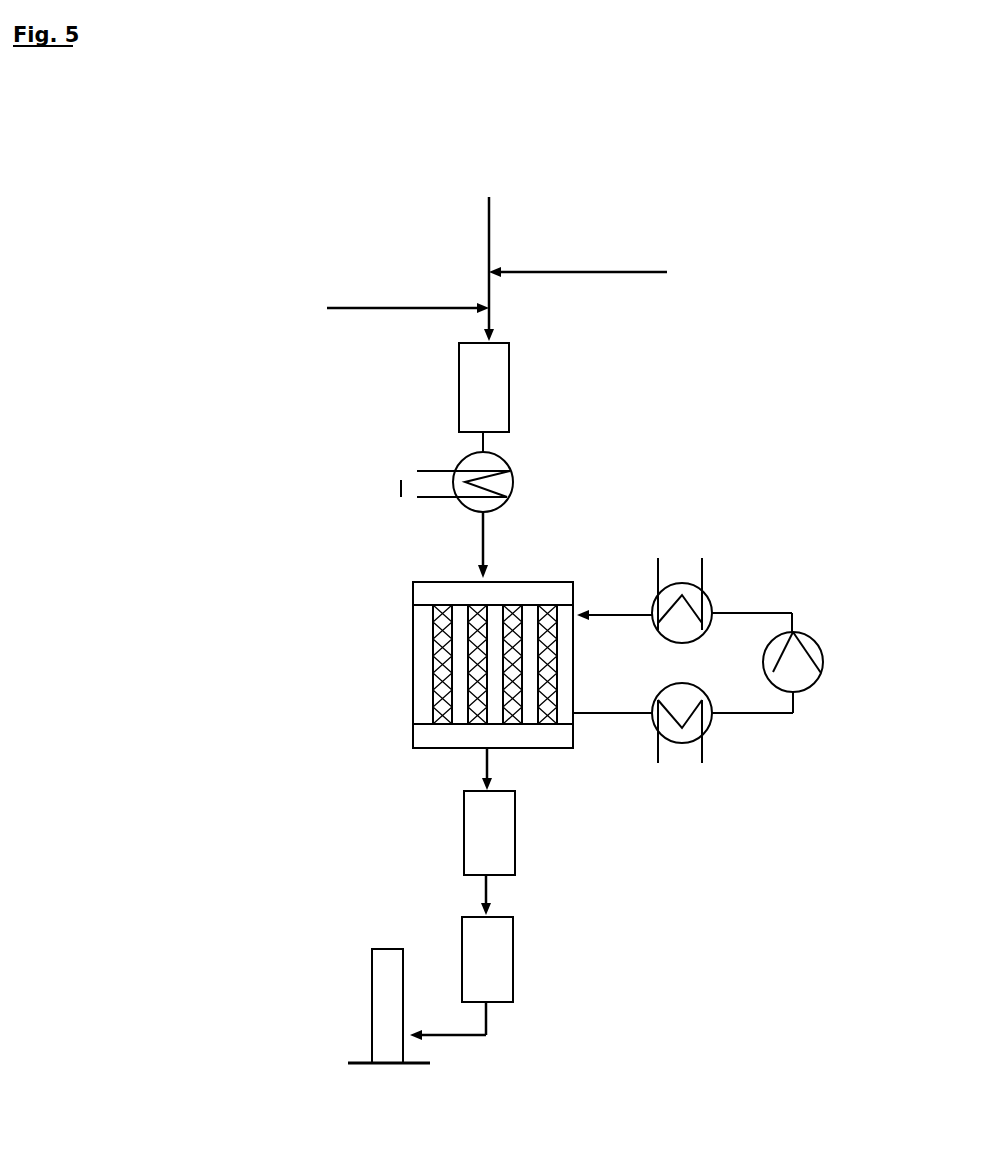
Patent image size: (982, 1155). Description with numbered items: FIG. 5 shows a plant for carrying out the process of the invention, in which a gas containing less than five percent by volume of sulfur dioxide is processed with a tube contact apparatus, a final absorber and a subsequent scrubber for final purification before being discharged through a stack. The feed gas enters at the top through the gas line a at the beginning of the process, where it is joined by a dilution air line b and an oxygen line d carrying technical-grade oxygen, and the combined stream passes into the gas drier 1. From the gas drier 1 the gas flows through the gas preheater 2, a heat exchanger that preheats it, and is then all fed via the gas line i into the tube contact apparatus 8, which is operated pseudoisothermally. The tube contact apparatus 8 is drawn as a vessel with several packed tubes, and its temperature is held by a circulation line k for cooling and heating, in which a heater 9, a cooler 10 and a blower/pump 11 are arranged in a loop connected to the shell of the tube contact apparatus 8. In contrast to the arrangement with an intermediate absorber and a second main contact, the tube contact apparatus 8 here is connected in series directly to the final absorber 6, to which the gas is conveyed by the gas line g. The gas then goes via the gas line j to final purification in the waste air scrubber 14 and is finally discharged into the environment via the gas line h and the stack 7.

The gas drier 1 is at (509, 377).
The gas preheater 2 is at (463, 463).
The final absorber 6 is at (517, 847).
The stack 7 is at (370, 1017).
The tube contact apparatus 8 is at (577, 592).
The heater 9 is at (712, 600).
The cooler 10 is at (712, 723).
The blower/pump 11 is at (823, 659).
The waste air scrubber 14 is at (515, 967).
The gas line at beginning of process a is at (489, 228).
The dilution air line b is at (578, 256).
The oxygen line d is at (408, 293).
The gas line to tube contact apparatus i is at (483, 543).
The gas line to final absorber g is at (487, 764).
The gas line to waste air scrubber j is at (486, 892).
The gas line to stack h is at (486, 1016).
The circulation line for cooling/heating k is at (792, 603).